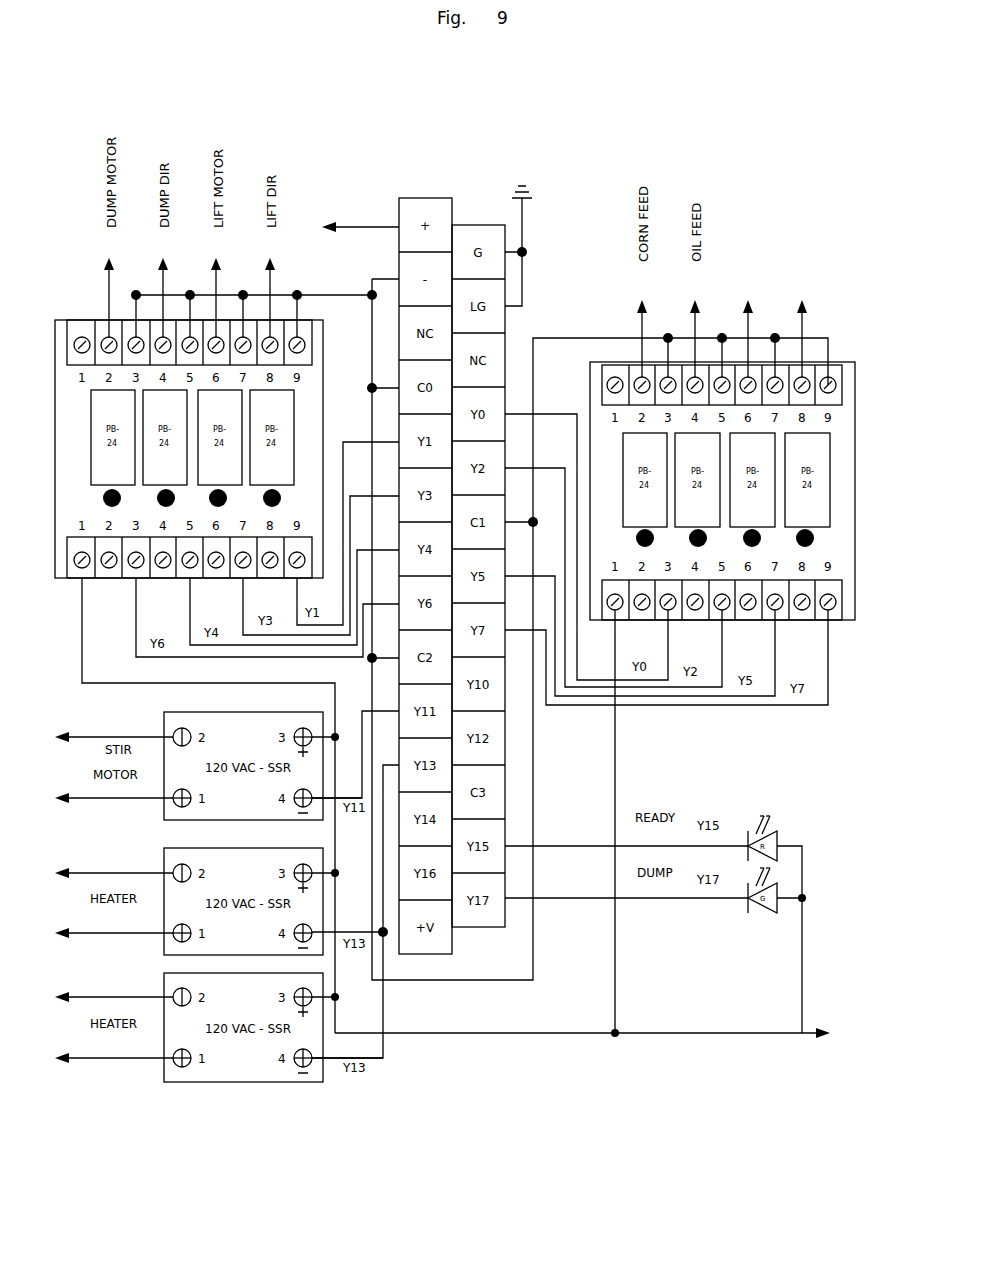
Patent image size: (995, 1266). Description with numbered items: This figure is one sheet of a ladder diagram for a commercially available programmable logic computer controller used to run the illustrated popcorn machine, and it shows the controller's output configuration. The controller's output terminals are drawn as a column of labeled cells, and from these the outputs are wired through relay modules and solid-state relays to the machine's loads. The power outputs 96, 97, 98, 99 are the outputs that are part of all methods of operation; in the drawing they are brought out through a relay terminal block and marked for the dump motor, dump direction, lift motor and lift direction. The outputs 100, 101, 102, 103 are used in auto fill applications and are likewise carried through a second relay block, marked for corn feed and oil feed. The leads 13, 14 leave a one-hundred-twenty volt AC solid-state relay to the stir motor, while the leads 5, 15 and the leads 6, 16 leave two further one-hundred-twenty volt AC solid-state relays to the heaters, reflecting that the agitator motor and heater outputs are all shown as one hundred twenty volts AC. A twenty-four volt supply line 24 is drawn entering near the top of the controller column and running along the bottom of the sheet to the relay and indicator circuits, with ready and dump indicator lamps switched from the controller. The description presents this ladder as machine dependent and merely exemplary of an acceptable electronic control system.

The 24 volt power supply 24 is at (576, 622).
The power output 96 is at (98, 297).
The power output 97 is at (153, 297).
The power output 98 is at (206, 297).
The power output 99 is at (260, 297).
The auto fill output 100 is at (627, 332).
The auto fill output 101 is at (684, 332).
The auto fill output 102 is at (738, 332).
The auto fill output 103 is at (793, 332).
The stir motor lead 13 is at (114, 729).
The stir motor lead 14 is at (114, 790).
The heater lead 5 is at (114, 864).
The heater lead 15 is at (114, 925).
The heater lead 6 is at (114, 989).
The heater lead 16 is at (114, 1050).